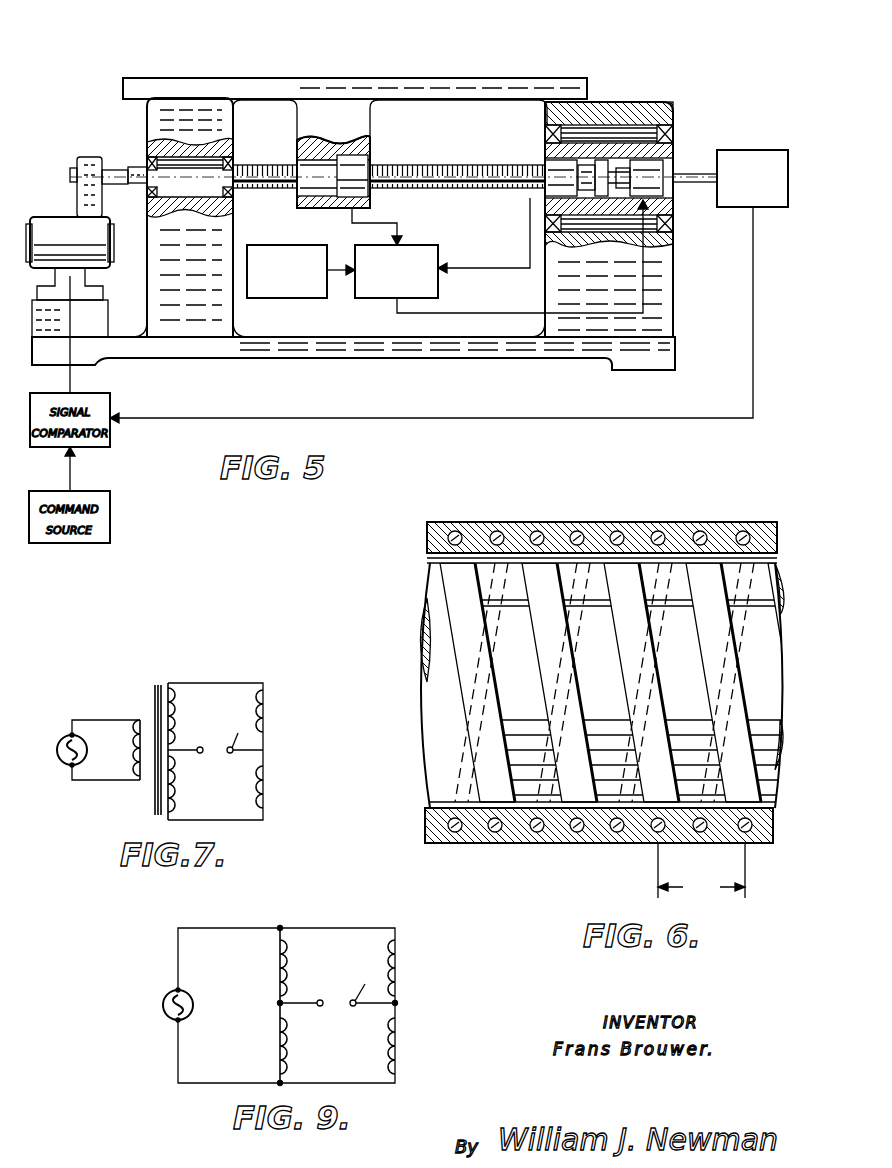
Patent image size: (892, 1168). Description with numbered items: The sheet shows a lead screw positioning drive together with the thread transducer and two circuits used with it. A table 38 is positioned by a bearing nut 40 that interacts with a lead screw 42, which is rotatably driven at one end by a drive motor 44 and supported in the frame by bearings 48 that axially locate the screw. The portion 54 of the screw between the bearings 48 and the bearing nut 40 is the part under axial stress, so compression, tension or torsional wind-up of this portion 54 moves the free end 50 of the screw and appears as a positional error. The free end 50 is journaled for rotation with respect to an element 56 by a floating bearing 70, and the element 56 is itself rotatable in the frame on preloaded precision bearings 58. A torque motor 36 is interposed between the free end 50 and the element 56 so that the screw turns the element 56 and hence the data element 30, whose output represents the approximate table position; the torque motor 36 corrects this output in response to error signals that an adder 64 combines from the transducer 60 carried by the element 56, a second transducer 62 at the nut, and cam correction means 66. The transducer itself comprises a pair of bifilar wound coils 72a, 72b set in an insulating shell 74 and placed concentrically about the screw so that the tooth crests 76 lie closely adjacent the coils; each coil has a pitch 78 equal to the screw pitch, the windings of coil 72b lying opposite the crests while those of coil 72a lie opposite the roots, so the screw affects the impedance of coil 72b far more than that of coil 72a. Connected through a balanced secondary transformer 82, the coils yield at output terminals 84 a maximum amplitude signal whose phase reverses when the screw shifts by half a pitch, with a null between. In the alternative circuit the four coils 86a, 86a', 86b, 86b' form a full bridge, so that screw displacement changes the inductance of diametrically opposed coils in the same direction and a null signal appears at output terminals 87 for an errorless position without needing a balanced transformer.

In FIG. 5, the data element 30 is at (752, 150).
In FIG. 5, the torque motor 36 is at (673, 142).
In FIG. 5, the table 38 is at (123, 86).
In FIG. 5, the bearing nut 40 is at (305, 151).
In FIG. 5, the lead screw 42 is at (420, 188).
In FIG. 5, the drive motor 44 is at (78, 215).
In FIG. 5, the bearings 48 is at (143, 158).
In FIG. 5, the free end of the lead screw 50 is at (588, 195).
In FIG. 5, the portion of the lead screw 54 is at (250, 188).
In FIG. 5, the element 56 is at (663, 162).
In FIG. 5, the preloaded precision bearings 58 is at (550, 128).
In FIG. 5, the transducer 60 is at (553, 200).
In FIG. 5, the transducer 62 is at (362, 152).
In FIG. 5, the adder 64 is at (365, 298).
In FIG. 5, the cam correction means 66 is at (285, 298).
In FIG. 5, the floating bearing 70 is at (600, 190).
In FIG. 6, the coil 72a is at (580, 531).
In FIG. 6, the coil 72b is at (575, 845).
In FIG. 6, the insulating shell 74 is at (690, 528).
In FIG. 6, the tooth crests 76 is at (470, 843).
In FIG. 6, the pitch 78 is at (701, 870).
In FIG. 7, the balanced secondary transformer 82 is at (168, 684).
In FIG. 7, the output terminals 84 is at (200, 746).
In FIG. 9, the coil 86a is at (304, 1046).
In FIG. 9, the coil 86a' is at (416, 1046).
In FIG. 9, the coil 86b is at (304, 968).
In FIG. 9, the coil 86b' is at (416, 968).
In FIG. 9, the output terminals 87 is at (326, 996).